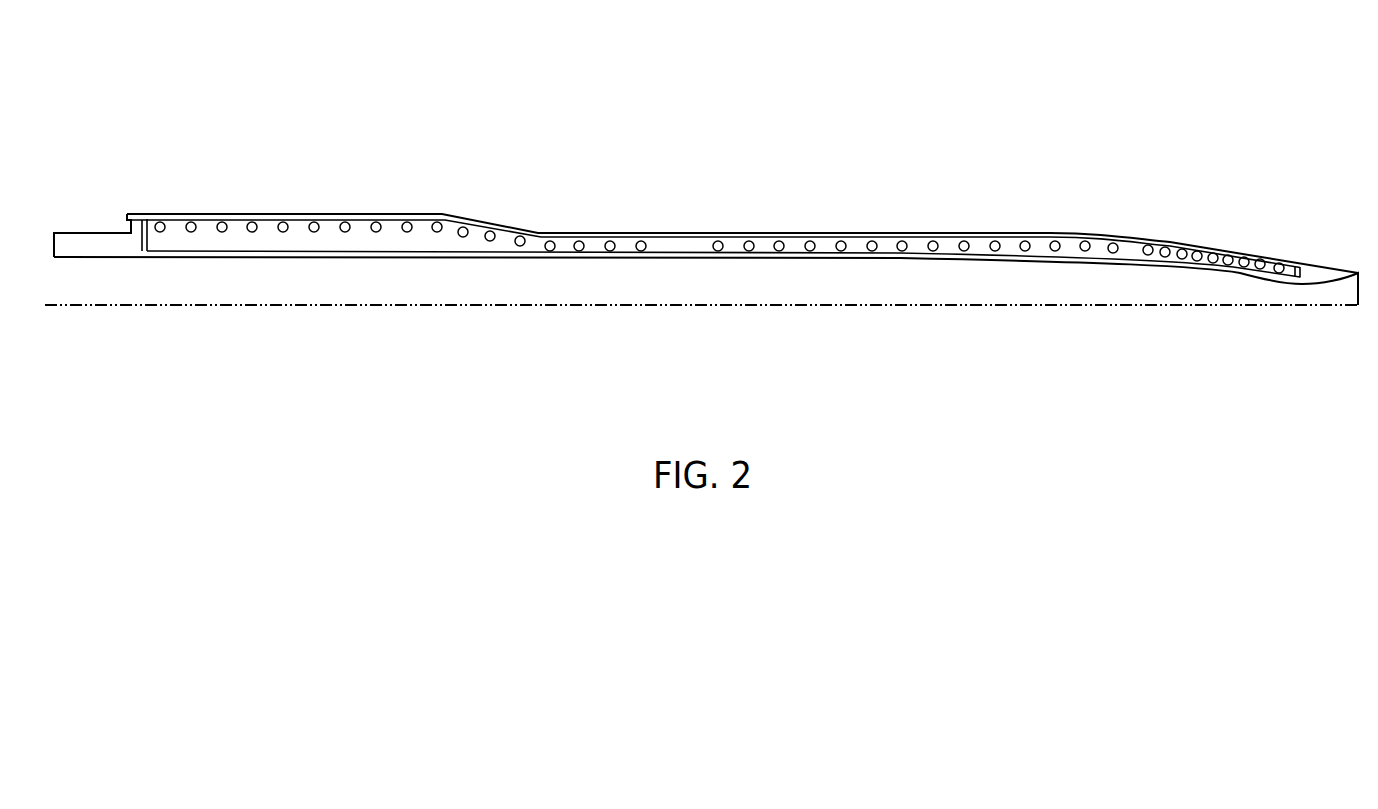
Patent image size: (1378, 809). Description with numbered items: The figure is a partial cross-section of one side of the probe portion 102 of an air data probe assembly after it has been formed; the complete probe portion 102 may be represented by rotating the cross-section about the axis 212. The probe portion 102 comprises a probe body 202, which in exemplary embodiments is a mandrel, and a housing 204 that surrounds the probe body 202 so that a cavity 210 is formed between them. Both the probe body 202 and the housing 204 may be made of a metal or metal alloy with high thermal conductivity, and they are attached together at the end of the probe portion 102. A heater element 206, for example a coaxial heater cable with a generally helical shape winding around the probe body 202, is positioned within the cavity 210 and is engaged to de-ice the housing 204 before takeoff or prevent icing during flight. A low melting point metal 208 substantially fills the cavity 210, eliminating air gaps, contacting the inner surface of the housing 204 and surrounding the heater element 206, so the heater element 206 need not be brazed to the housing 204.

The probe portion 102 is at (193, 79).
The probe body 202 is at (1008, 258).
The housing 204 is at (1008, 232).
The heater element 206 is at (872, 257).
The low melting point metal 208 is at (678, 244).
The cavity 210 is at (271, 233).
The axis 212 is at (163, 306).